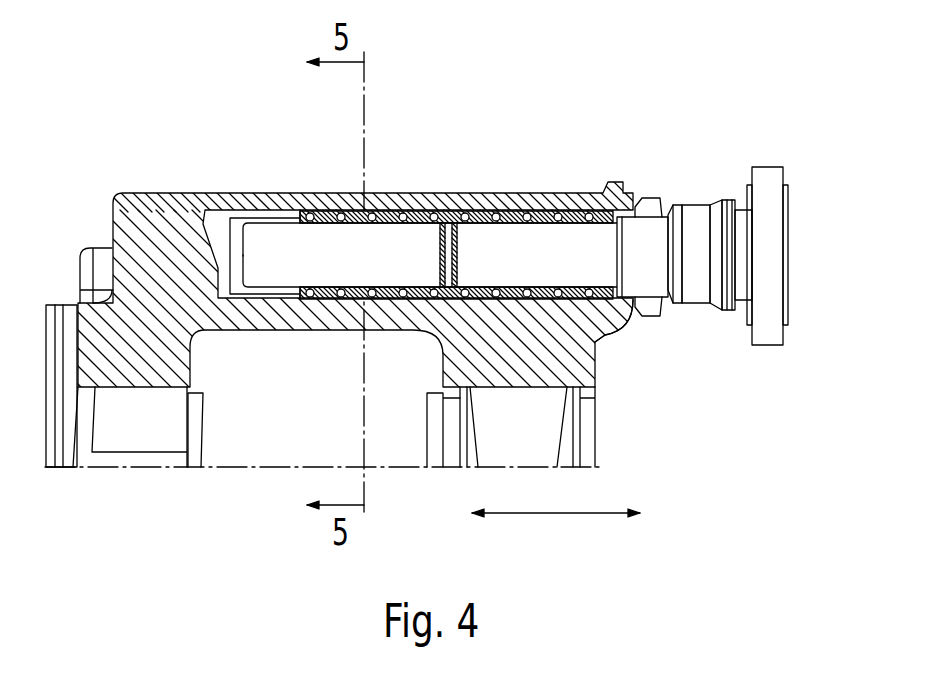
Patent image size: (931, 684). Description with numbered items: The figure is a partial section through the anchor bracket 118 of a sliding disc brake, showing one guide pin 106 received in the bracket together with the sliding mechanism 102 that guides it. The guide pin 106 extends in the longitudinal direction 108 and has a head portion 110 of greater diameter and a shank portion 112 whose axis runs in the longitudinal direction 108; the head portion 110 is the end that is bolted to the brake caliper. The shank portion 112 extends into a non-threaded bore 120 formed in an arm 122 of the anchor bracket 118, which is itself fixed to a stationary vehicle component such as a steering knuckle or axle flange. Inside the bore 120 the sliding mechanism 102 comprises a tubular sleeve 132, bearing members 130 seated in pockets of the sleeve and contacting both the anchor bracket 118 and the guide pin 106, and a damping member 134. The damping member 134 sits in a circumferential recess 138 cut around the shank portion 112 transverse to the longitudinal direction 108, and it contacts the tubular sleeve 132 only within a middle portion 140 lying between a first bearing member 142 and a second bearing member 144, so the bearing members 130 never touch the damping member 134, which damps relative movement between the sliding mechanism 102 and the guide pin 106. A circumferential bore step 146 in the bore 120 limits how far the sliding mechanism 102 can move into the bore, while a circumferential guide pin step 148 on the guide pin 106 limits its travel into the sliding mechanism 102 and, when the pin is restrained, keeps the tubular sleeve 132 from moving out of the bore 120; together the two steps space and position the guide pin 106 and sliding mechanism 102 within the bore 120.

The sliding mechanism 102 is at (533, 328).
The guide pin 106 is at (683, 170).
The longitudinal direction 108 is at (557, 513).
The head portion 110 is at (768, 167).
The shank portion 112 is at (250, 240).
The anchor bracket 118 is at (137, 237).
The bore 120 is at (233, 295).
The arm 122 is at (425, 312).
The bearing member 130 is at (566, 222).
The tubular sleeve 132 is at (620, 328).
The damping member 134 is at (457, 262).
The circumferential recess 138 is at (440, 272).
The middle portion 140 is at (448, 197).
The first bearing member 142 is at (535, 197).
The second bearing member 144 is at (392, 197).
The bore step 146 is at (287, 197).
The guide pin step 148 is at (640, 227).